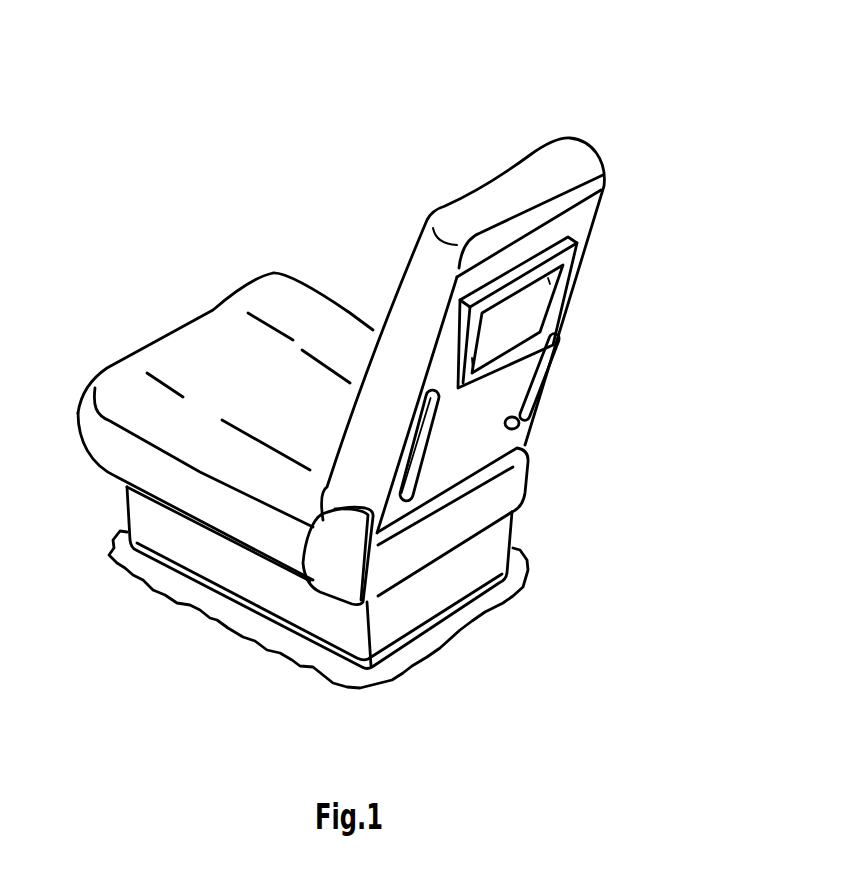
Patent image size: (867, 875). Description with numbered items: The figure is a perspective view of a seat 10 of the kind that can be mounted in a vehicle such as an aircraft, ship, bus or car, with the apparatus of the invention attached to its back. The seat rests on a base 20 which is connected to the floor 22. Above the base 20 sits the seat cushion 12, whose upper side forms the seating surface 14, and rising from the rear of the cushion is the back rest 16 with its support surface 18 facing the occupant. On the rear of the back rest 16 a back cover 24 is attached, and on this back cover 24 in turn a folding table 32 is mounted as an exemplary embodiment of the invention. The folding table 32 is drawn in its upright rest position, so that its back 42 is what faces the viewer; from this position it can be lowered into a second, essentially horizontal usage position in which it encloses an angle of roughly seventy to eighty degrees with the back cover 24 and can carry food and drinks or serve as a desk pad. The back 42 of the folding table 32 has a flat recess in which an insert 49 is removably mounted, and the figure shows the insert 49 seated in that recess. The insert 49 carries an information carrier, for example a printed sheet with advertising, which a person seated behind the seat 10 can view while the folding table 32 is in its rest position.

The seat 10 is at (440, 105).
The seat cushion 12 is at (103, 329).
The seating surface 14 is at (217, 350).
The back rest 16 is at (618, 124).
The support surface 18 is at (403, 253).
The base 20 is at (190, 553).
The floor 22 is at (527, 563).
The back cover 24 is at (598, 216).
The folding table 32 is at (565, 265).
The back 42 is at (541, 344).
The insert 49 is at (527, 307).